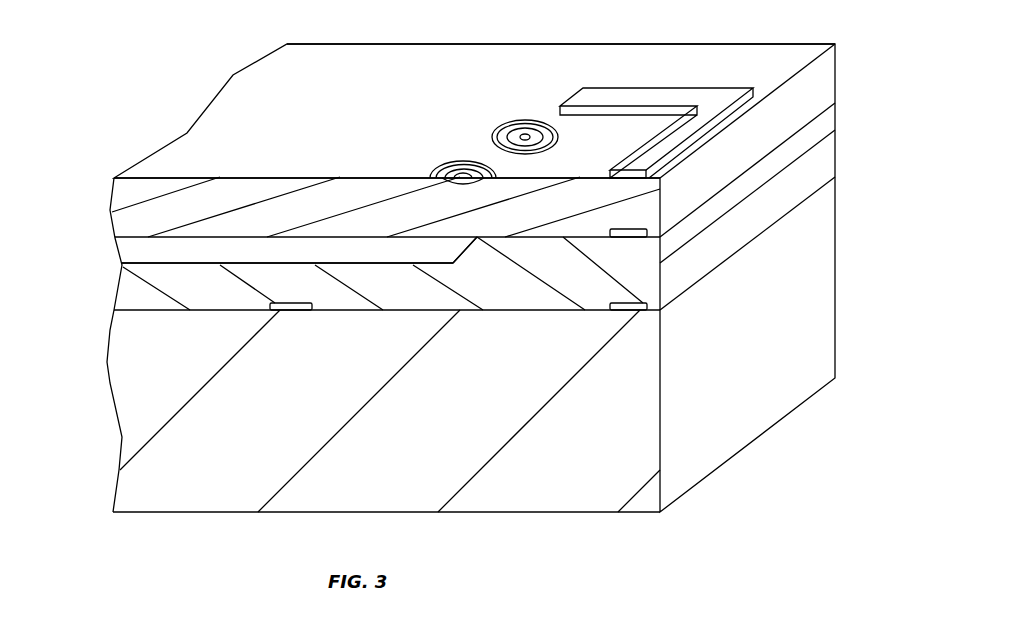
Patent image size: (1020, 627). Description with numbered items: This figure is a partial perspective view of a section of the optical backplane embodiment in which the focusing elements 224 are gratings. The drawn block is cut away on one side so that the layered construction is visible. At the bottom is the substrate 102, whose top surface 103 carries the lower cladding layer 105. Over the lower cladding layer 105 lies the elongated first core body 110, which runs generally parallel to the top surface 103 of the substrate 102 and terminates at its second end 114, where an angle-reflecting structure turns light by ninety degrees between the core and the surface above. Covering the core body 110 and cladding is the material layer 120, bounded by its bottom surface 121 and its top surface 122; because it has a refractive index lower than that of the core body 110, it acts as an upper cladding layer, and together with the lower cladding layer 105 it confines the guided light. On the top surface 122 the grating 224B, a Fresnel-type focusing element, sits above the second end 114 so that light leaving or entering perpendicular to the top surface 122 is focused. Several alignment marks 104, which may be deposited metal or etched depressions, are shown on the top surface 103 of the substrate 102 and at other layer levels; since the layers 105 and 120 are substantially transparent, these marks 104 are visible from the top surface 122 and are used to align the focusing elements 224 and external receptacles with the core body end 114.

The substrate 102 is at (110, 383).
The top surface 103 is at (157, 310).
The alignment marks 104 is at (655, 88).
The lower cladding layer 105 is at (120, 283).
The first core body 110 is at (220, 237).
The second end 114 is at (463, 252).
The material layer 120 is at (110, 210).
The bottom surface 121 is at (147, 238).
The top surface 122 is at (148, 177).
The focusing elements 224 is at (497, 130).
The grating 224B is at (440, 167).